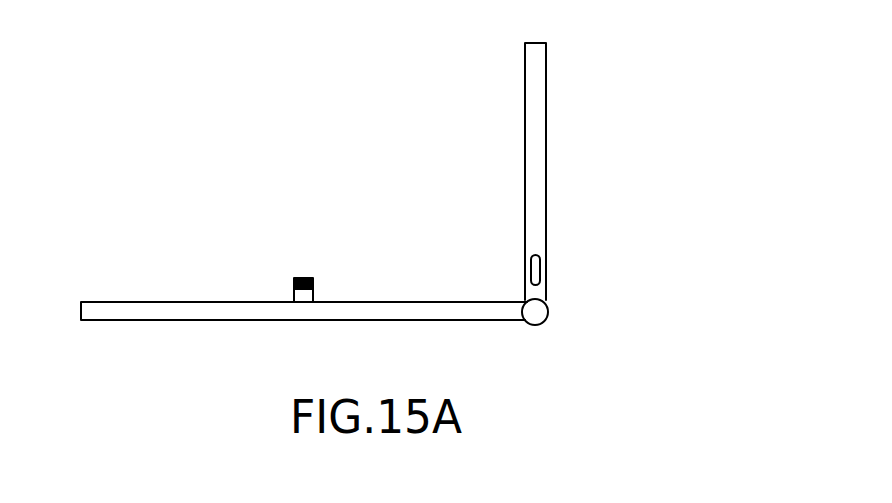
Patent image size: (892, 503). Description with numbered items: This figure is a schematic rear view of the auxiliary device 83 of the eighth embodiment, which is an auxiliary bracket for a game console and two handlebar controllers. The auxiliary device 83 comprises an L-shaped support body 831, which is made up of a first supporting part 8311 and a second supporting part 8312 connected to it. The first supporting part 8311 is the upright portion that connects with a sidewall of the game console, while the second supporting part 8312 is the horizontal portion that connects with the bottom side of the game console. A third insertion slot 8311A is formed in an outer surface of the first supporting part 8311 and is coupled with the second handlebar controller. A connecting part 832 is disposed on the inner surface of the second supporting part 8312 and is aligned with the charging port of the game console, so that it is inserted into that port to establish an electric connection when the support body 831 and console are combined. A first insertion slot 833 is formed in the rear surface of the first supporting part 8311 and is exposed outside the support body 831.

The auxiliary device 83 is at (590, 140).
The support body 831 is at (170, 312).
The first supporting part 8311 is at (535, 128).
The third insertion slot 8311A is at (547, 72).
The second supporting part 8312 is at (255, 311).
The connecting part 832 is at (297, 280).
The first insertion slot 833 is at (535, 273).